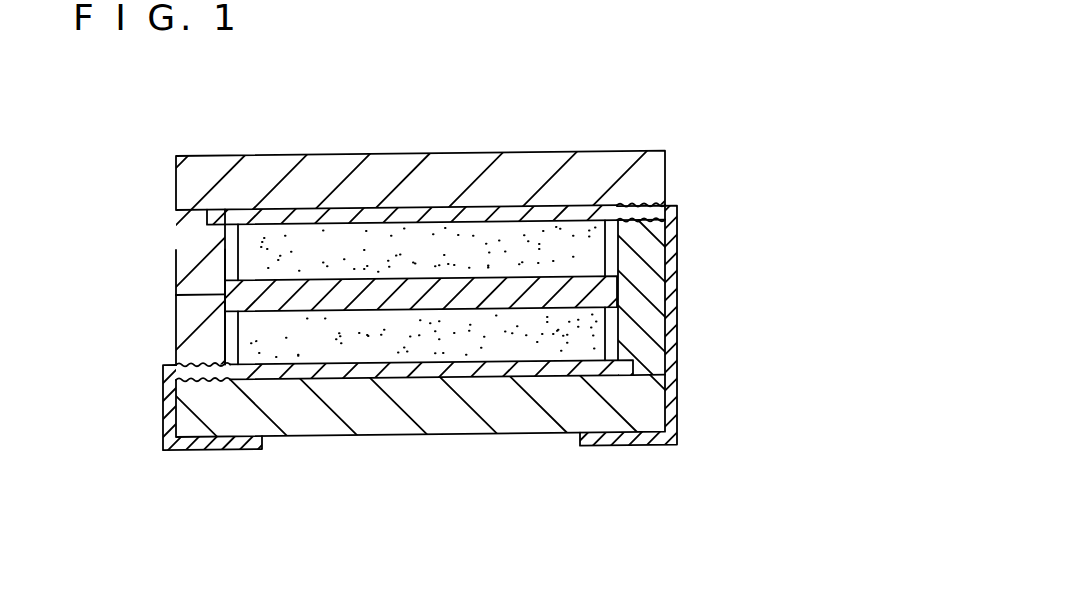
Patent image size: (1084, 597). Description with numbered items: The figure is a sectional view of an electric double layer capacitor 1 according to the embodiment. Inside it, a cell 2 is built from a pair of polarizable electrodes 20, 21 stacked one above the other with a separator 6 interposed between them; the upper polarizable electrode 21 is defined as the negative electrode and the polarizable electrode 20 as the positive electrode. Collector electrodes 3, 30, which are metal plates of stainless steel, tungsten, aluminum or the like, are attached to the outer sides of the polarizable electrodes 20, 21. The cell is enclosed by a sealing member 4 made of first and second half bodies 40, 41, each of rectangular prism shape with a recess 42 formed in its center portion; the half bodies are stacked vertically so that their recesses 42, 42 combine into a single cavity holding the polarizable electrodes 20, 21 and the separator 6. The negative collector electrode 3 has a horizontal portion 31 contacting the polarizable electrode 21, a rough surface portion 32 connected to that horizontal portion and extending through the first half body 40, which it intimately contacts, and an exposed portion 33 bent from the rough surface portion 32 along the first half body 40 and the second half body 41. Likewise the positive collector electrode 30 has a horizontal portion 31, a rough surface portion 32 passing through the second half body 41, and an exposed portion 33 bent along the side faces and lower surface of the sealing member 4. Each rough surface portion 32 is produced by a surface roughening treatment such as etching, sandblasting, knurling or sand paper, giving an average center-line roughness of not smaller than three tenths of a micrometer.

The electric double layer capacitor 1 is at (667, 492).
The cell 2 is at (748, 368).
The negative collector electrode 3 is at (715, 58).
The sealing member 4 is at (88, 237).
The separator 6 is at (602, 294).
The polarizable electrode 20 is at (577, 332).
The polarizable electrode 21 is at (577, 256).
The positive collector electrode 30 is at (485, 510).
The horizontal portion 31 is at (433, 207).
The rough surface portion 32 is at (656, 205).
The exposed portion 33 is at (672, 398).
The first half body 40 is at (180, 252).
The second half body 41 is at (183, 317).
The recess 42 is at (618, 238).